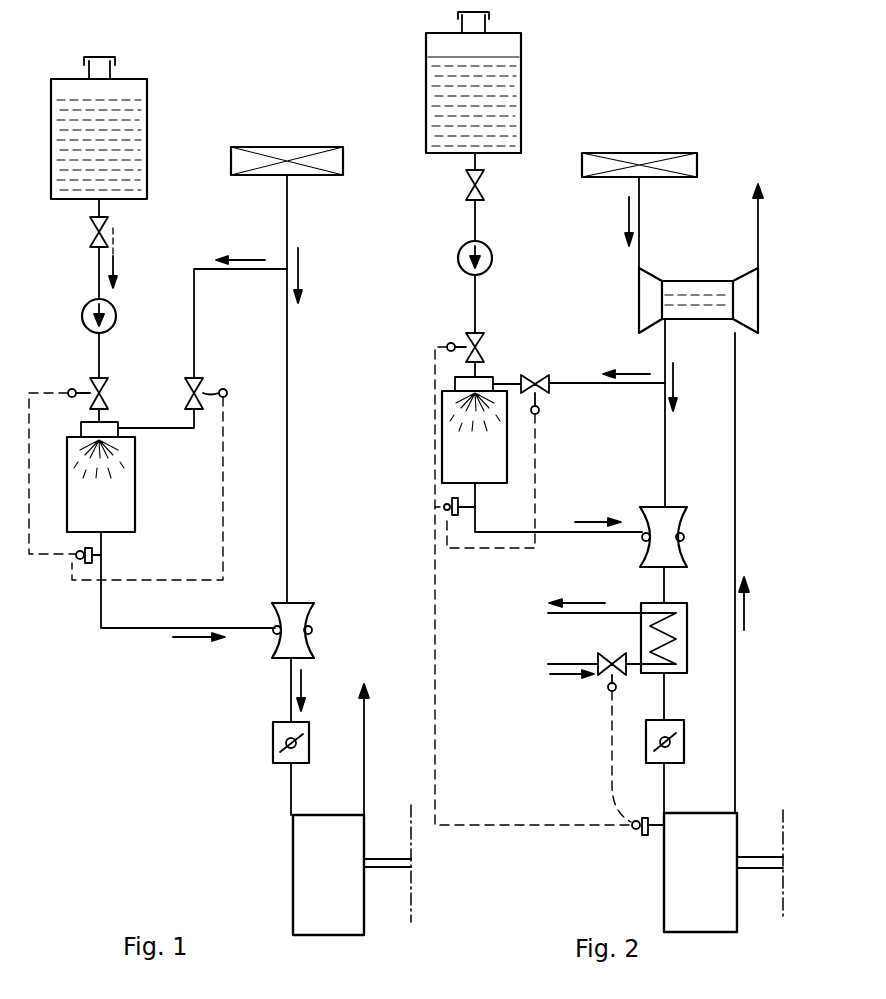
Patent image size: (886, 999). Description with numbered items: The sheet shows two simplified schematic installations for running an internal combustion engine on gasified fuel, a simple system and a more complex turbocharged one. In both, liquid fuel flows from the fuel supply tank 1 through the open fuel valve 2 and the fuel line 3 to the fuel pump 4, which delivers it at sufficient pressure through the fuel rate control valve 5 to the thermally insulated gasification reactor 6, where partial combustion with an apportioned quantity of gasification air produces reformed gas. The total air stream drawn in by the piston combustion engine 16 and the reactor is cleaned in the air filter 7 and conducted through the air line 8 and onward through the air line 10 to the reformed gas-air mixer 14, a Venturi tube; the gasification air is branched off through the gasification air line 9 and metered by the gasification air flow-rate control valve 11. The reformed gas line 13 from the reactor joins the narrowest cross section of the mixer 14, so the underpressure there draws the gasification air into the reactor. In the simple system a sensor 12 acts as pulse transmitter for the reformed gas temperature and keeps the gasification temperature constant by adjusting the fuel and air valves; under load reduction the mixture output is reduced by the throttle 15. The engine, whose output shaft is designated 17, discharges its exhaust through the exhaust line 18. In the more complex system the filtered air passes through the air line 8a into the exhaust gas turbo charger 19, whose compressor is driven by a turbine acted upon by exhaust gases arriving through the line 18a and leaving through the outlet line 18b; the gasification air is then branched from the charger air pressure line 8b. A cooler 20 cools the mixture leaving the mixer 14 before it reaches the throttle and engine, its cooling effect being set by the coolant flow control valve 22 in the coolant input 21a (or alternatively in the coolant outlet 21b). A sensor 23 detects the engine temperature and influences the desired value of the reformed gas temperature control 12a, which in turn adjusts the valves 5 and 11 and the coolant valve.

In FIG. 1, the fuel supply tank 1 is at (51, 143).
In FIG. 2, the fuel supply tank 1 is at (426, 80).
In FIG. 1, the fuel valve 2 is at (90, 232).
In FIG. 2, the fuel valve 2 is at (466, 185).
In FIG. 1, the fuel line 3 is at (99, 270).
In FIG. 2, the fuel line 3 is at (475, 219).
In FIG. 1, the fuel pump 4 is at (82, 316).
In FIG. 2, the fuel pump 4 is at (458, 260).
In FIG. 1, the fuel rate control valve 5 is at (95, 387).
In FIG. 2, the fuel rate control valve 5 is at (472, 343).
In FIG. 1, the gasification reactor 6 is at (67, 483).
In FIG. 2, the gasification reactor 6 is at (442, 433).
In FIG. 1, the air filter 7 is at (231, 163).
In FIG. 2, the air filter 7 is at (639, 153).
In FIG. 1, the air line 8 is at (287, 217).
In FIG. 2, the air line 8a is at (639, 210).
In FIG. 2, the charger air pressure line 8b is at (665, 340).
In FIG. 1, the gasification air line 9 is at (248, 270).
In FIG. 2, the gasification air line 9 is at (612, 385).
In FIG. 1, the air line 10 is at (287, 350).
In FIG. 2, the air line 10 is at (665, 450).
In FIG. 1, the gasification air flow-rate control valve 11 is at (197, 388).
In FIG. 2, the gasification air flow-rate control valve 11 is at (535, 375).
In FIG. 1, the sensor 12 is at (77, 558).
In FIG. 2, the reformed gas temperature control 12a is at (445, 507).
In FIG. 1, the reformed gas line 13 is at (101, 612).
In FIG. 2, the reformed gas line 13 is at (503, 532).
In FIG. 1, the reformed gas-air mixer 14 is at (275, 659).
In FIG. 2, the reformed gas-air mixer 14 is at (687, 511).
In FIG. 1, the throttle 15 is at (273, 743).
In FIG. 2, the throttle 15 is at (684, 743).
In FIG. 1, the piston combustion engine 16 is at (293, 861).
In FIG. 2, the piston combustion engine 16 is at (664, 878).
In FIG. 1, the output shaft 17 is at (388, 869).
In FIG. 2, the output shaft 17 is at (767, 869).
In FIG. 1, the exhaust line 18 is at (364, 748).
In FIG. 2, the exhaust line 18a is at (735, 422).
In FIG. 2, the exhaust outlet line 18b is at (758, 245).
In FIG. 2, the exhaust gas turbo charger 19 is at (703, 283).
In FIG. 2, the cooler 20 is at (687, 637).
In FIG. 2, the coolant input 21a is at (548, 663).
In FIG. 2, the coolant outlet 21b is at (548, 614).
In FIG. 2, the coolant flow control valve 22 is at (608, 672).
In FIG. 2, the sensor 23 is at (633, 822).